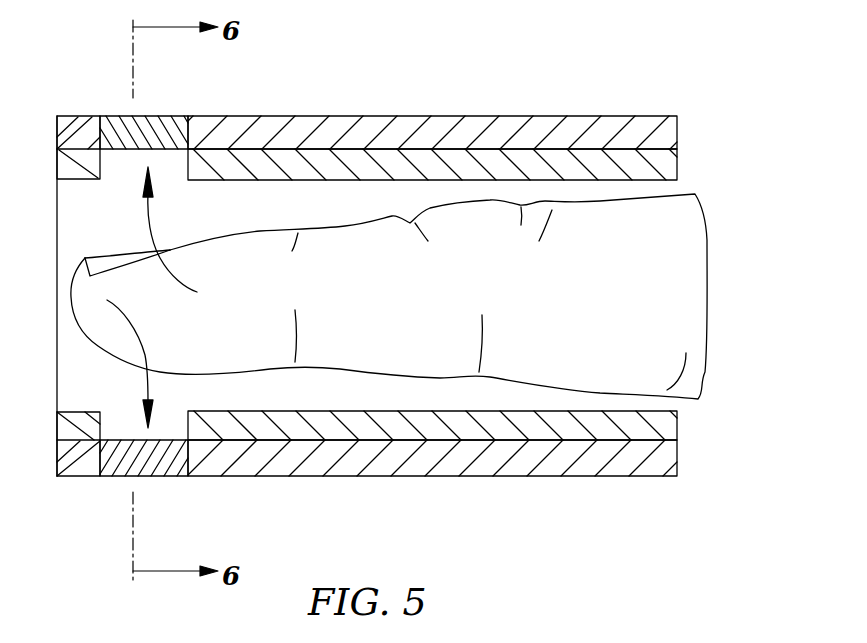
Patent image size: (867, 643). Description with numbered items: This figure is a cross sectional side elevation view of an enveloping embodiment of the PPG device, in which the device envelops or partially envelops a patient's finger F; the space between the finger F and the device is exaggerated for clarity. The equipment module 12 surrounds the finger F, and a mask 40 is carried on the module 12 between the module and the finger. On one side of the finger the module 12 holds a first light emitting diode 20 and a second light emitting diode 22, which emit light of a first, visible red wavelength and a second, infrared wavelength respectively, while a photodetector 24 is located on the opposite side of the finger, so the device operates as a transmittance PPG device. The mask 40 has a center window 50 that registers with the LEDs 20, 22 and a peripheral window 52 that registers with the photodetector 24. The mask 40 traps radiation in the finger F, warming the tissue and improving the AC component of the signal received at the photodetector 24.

The equipment module 12 is at (615, 137).
The mask 40 is at (653, 165).
The first light emitting diode 20 is at (162, 97).
The second light emitting diode 22 is at (135, 133).
The photodetector 24 is at (150, 457).
The center window 50 is at (184, 236).
The peripheral window 52 is at (115, 358).
The finger F is at (578, 321).